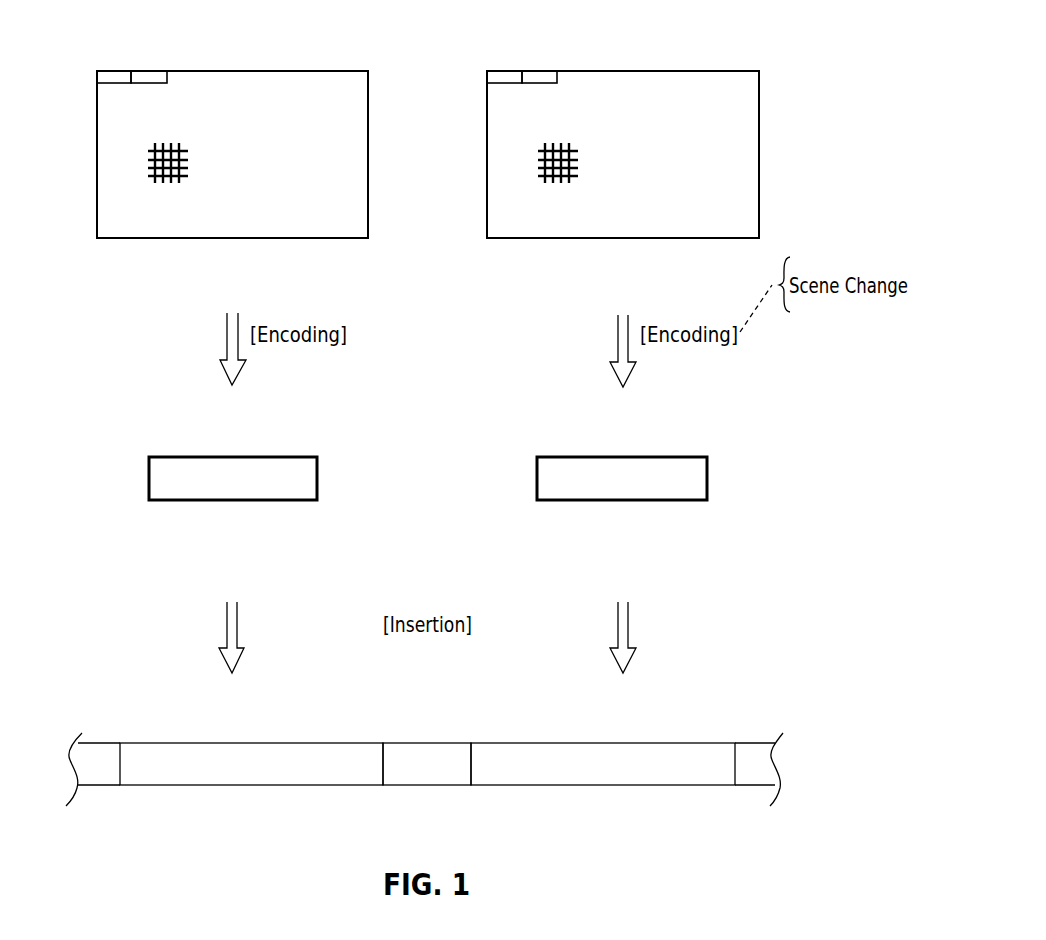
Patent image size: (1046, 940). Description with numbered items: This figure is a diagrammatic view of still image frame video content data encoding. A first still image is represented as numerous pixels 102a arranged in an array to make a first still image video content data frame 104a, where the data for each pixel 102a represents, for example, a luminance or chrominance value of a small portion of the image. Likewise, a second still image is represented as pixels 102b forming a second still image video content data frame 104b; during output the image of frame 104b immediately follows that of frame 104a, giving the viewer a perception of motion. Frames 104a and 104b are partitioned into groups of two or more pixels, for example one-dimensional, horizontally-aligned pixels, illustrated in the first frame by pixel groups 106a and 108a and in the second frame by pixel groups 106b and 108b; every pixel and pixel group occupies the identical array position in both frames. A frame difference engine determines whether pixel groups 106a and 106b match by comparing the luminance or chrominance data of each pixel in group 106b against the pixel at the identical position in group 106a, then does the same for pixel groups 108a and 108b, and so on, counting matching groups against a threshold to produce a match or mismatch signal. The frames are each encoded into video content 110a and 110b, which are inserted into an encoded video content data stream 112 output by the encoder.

The pixels 102a is at (140, 156).
The first still image video content data frame 104a is at (134, 240).
The pixel group 106a is at (115, 75).
The pixel group 108a is at (148, 75).
The pixels 102b is at (527, 145).
The second still image video content data frame 104b is at (524, 240).
The pixel group 106b is at (505, 75).
The pixel group 108b is at (538, 75).
The first encoded video content 110a is at (315, 457).
The second encoded video content 110b is at (705, 457).
The encoded video content data stream 112 is at (427, 785).